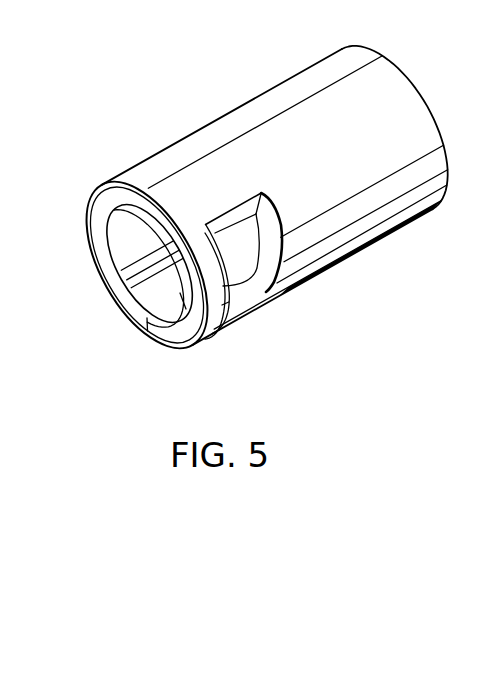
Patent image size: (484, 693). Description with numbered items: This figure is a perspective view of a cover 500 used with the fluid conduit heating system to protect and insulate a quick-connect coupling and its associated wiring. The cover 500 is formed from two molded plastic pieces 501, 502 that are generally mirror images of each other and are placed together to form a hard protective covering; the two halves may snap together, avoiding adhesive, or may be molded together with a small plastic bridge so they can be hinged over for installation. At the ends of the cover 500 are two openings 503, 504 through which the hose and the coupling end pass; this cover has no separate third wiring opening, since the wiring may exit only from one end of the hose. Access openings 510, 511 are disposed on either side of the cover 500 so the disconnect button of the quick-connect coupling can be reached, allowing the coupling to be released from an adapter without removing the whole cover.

The cover 500 is at (209, 118).
The cover piece 501 is at (128, 163).
The cover piece 502 is at (304, 290).
The opening 503 is at (152, 358).
The opening 504 is at (417, 76).
The access opening 510 is at (241, 331).
The access opening 511 is at (114, 268).